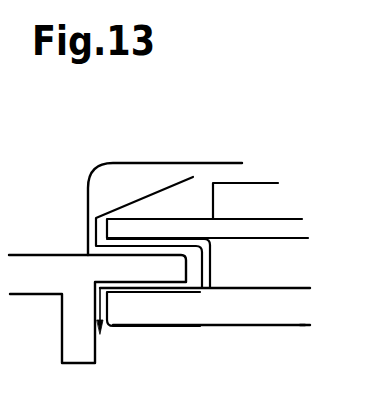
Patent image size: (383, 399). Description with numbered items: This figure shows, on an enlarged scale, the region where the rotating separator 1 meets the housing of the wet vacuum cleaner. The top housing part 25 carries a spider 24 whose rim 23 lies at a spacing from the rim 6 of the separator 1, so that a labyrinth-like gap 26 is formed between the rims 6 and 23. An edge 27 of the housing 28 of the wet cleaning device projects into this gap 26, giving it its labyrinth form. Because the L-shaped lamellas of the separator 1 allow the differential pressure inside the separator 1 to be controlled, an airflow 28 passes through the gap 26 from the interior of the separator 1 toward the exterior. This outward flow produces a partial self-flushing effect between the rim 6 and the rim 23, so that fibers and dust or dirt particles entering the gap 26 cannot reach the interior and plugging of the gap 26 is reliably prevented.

The separator 1 is at (304, 324).
The rim of the separator 6 is at (223, 327).
The rim of the spider 23 is at (310, 228).
The spider 24 is at (262, 197).
The top housing part 25 is at (157, 163).
The gap 26 is at (156, 256).
The edge of the housing 27 is at (138, 272).
The housing 28 is at (98, 308).